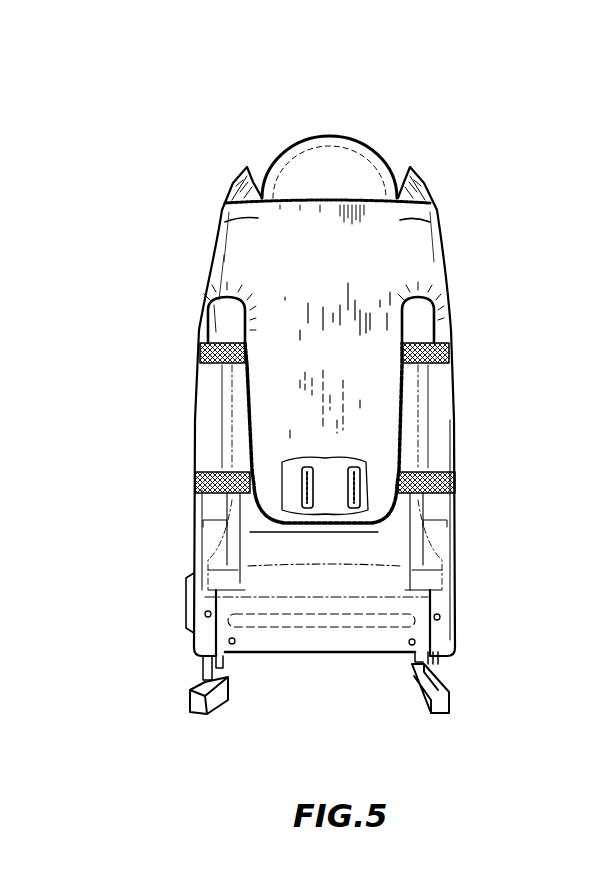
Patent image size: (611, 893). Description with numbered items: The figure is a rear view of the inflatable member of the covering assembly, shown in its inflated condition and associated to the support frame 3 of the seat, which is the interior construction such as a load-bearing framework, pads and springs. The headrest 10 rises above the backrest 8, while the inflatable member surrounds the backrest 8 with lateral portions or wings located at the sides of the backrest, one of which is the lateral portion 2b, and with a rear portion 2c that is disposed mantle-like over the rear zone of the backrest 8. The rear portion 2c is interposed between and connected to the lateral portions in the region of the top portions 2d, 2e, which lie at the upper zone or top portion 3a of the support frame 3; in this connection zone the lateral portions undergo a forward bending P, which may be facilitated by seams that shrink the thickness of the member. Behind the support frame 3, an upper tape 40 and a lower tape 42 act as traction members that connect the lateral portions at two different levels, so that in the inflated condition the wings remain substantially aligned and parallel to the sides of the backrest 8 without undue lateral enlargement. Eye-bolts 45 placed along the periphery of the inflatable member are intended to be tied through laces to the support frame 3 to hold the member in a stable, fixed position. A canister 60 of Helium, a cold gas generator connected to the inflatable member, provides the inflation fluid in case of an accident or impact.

The headrest 10 is at (332, 150).
The bending P is at (257, 221).
The top portion 2d is at (247, 248).
The top portion 2e is at (437, 260).
The lateral portion 2b is at (450, 320).
The top portion of the support frame 3a is at (212, 372).
The rear portion 2c is at (353, 393).
The upper tape 40 is at (203, 356).
The lower tape 42 is at (222, 491).
The eye-bolts 45 is at (248, 450).
The support frame 3 is at (187, 535).
The backrest 8 is at (378, 522).
The canister 60 is at (350, 507).